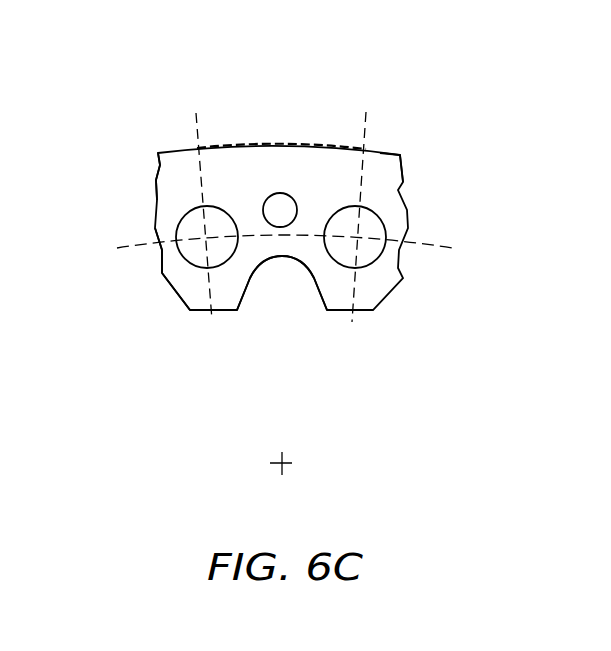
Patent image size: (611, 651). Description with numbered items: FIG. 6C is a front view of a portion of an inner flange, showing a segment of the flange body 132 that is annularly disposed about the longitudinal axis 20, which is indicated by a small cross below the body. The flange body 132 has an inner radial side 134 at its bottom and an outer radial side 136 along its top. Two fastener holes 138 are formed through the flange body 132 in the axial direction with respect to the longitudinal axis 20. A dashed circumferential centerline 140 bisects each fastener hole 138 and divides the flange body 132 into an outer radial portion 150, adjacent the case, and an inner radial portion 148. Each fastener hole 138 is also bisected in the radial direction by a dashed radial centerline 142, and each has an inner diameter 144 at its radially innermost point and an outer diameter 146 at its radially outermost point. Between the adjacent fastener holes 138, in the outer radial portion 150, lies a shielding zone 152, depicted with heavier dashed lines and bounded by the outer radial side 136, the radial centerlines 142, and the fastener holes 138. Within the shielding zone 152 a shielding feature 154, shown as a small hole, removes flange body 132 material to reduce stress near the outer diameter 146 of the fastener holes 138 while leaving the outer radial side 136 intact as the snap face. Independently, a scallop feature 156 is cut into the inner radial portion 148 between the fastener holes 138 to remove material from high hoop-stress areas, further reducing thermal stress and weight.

The longitudinal axis 20 is at (283, 468).
The flange body 132 is at (385, 185).
The inner radial side 134 is at (222, 313).
The outer radial side 136 is at (388, 153).
The fastener hole 138 is at (373, 253).
The circumferential centerline 140 is at (441, 247).
The radial centerline 142 is at (196, 113).
The inner diameter 144 is at (198, 275).
The outer diameter 146 is at (188, 205).
The inner radial portion 148 is at (178, 263).
The outer radial portion 150 is at (180, 173).
The shielding zone 152 is at (316, 183).
The shielding feature 154 is at (264, 208).
The scallop feature 156 is at (265, 283).